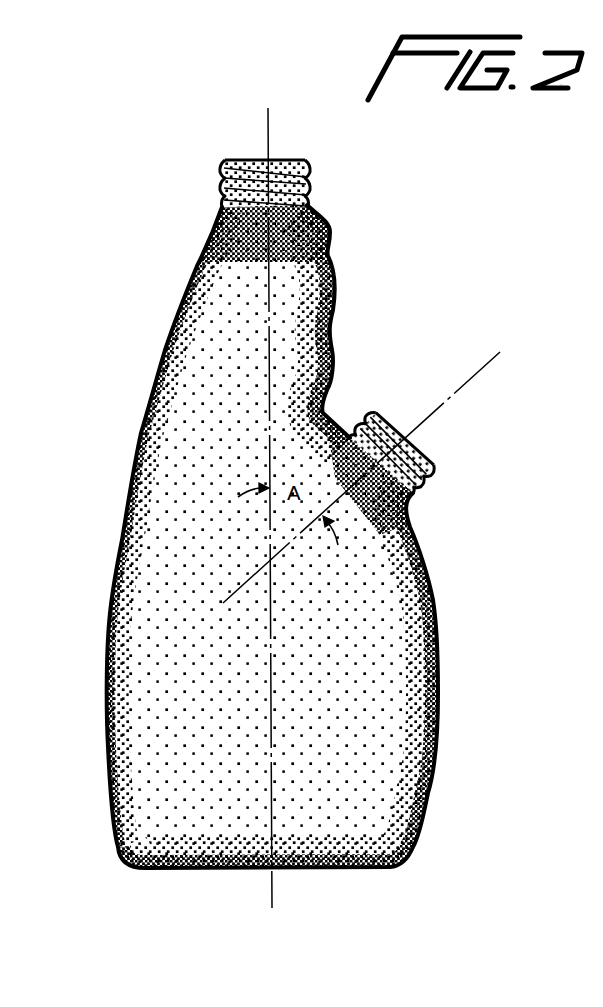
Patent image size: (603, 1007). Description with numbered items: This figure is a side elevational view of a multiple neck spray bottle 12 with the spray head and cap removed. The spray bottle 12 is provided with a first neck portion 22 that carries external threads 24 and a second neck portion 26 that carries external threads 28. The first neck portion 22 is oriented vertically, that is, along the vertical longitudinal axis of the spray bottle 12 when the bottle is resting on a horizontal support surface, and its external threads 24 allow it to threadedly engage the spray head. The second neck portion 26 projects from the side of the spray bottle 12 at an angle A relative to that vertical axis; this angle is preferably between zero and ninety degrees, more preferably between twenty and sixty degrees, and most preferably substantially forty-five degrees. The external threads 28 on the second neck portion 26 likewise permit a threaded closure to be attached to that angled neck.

The spray bottle 12 is at (146, 266).
The first neck portion 22 is at (312, 198).
The external threads 24 is at (226, 183).
The second neck portion 26 is at (418, 497).
The external threads 28 is at (433, 462).